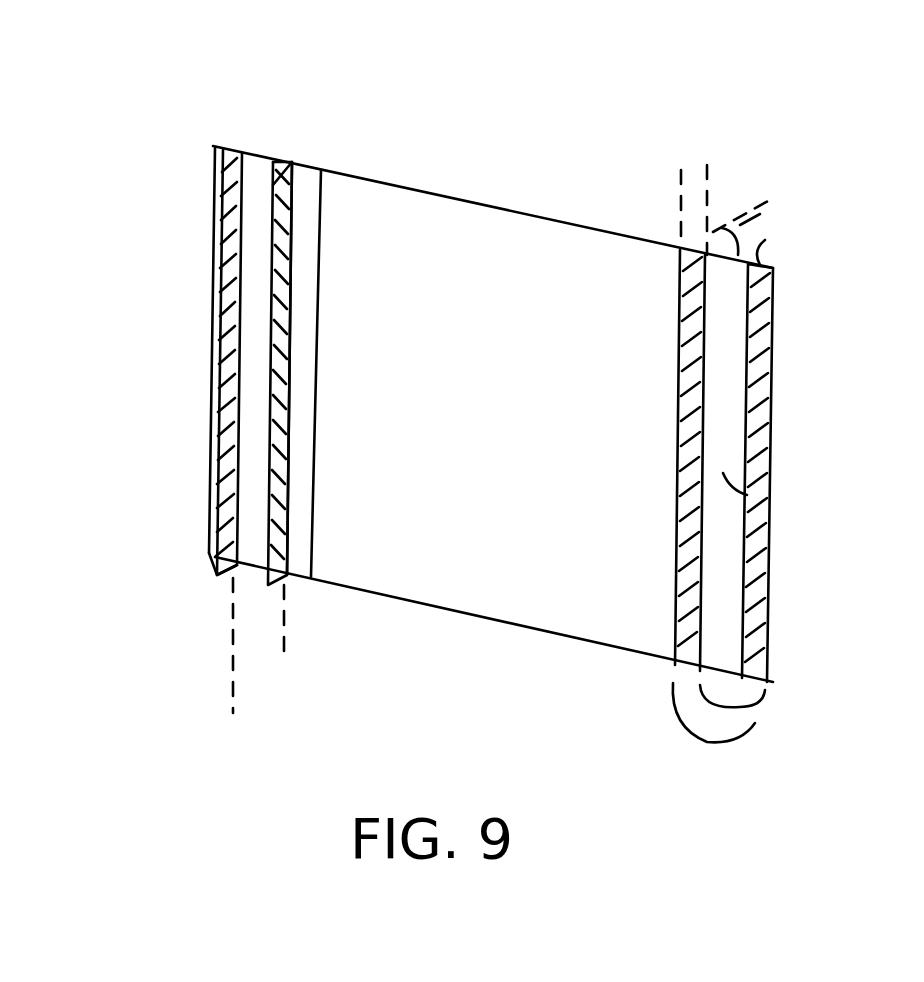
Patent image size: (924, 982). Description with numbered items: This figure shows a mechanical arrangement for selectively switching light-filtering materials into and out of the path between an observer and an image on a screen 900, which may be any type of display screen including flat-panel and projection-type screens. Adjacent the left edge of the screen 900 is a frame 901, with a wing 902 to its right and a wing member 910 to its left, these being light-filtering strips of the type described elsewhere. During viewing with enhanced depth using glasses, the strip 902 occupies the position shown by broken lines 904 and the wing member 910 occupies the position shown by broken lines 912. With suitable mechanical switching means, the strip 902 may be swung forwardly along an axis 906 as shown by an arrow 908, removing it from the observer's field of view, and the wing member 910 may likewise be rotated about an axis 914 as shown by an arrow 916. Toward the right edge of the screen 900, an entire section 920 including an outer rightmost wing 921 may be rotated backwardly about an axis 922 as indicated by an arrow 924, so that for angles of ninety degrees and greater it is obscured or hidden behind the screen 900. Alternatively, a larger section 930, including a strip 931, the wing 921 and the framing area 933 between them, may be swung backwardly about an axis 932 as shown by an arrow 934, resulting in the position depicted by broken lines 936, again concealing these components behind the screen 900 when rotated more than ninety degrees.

The screen 900 is at (527, 338).
The frame 901 is at (268, 177).
The wing 902 is at (287, 158).
The broken lines 904 is at (320, 256).
The axis 906 is at (284, 653).
The arrow 908 is at (272, 150).
The wing member 910 is at (213, 570).
The broken lines 912 is at (213, 192).
The axis 914 is at (225, 715).
The arrow 916 is at (218, 150).
The section 920 is at (748, 707).
The outer rightmost wing 921 is at (765, 418).
The axis 922 is at (712, 170).
The arrow 924 is at (770, 243).
The section 930 is at (730, 745).
The strip 931 is at (680, 463).
The axis 932 is at (675, 173).
The framing area 933 is at (748, 495).
The arrow 934 is at (735, 232).
The broken lines 936 is at (775, 197).